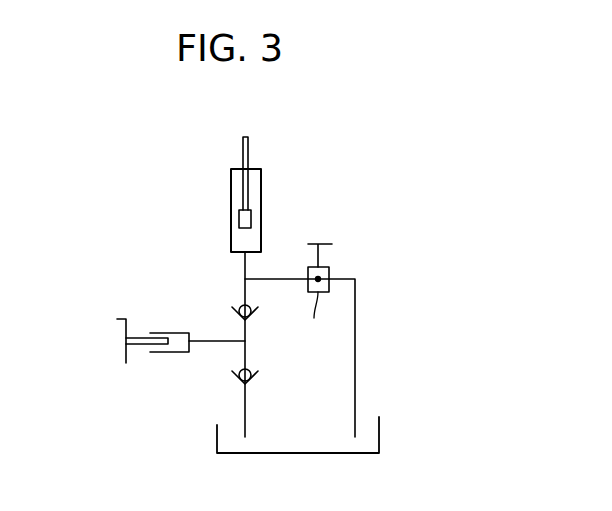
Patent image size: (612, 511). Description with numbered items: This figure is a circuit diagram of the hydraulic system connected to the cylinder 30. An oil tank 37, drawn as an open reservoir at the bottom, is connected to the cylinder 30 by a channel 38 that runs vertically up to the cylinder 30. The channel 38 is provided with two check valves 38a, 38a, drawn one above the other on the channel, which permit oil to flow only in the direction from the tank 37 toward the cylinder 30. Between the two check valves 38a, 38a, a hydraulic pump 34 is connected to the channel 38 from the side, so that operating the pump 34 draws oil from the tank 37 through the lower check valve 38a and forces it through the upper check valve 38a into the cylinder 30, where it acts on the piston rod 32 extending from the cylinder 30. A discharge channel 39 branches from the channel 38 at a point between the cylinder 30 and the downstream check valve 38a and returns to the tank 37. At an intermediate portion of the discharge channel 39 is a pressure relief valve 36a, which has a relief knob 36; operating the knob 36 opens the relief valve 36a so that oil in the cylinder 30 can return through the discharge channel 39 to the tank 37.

The cylinder 30 is at (261, 195).
The piston rod 32 is at (248, 142).
The hydraulic pump 34 is at (169, 332).
The relief knob 36 is at (323, 256).
The pressure relief valve 36a is at (321, 321).
The oil tank 37 is at (217, 441).
The channel 38 is at (244, 289).
The check valve 38a is at (252, 316).
The discharge channel 39 is at (285, 279).